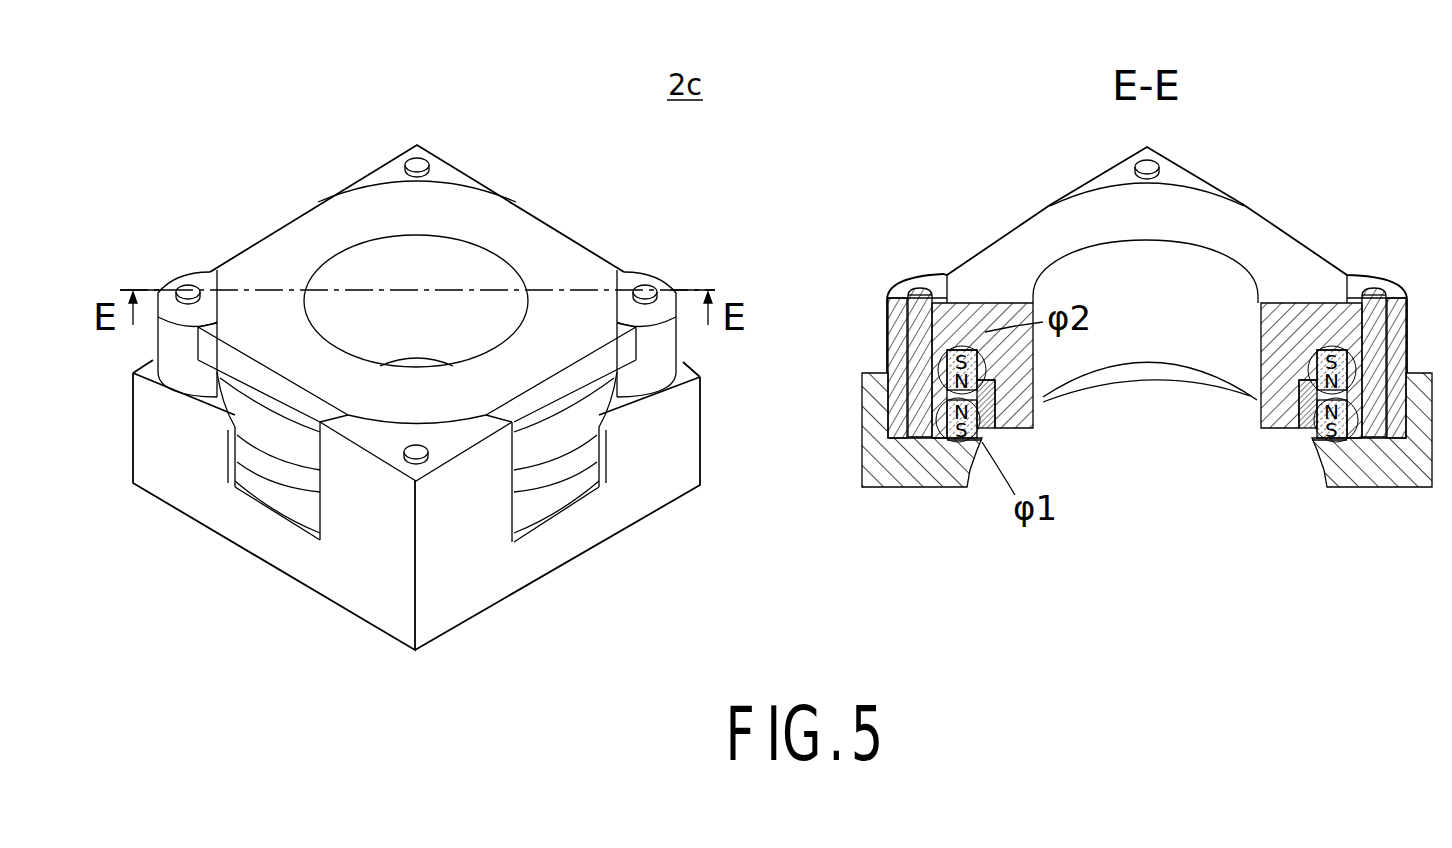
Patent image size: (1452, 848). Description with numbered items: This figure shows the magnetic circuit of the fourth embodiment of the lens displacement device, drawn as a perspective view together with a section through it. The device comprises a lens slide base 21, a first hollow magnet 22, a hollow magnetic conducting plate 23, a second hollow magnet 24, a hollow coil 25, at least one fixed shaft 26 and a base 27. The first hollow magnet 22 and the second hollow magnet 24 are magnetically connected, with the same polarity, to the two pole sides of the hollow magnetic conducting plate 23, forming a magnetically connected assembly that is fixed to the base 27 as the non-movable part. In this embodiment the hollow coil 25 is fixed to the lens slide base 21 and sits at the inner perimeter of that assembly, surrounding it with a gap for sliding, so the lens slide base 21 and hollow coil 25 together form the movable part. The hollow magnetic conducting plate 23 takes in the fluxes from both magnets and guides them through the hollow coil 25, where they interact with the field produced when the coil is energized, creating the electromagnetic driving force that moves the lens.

The lens slide base 21 is at (267, 243).
The first hollow magnet 22 is at (236, 478).
The hollow magnetic conducting plate 23 is at (310, 485).
The second hollow magnet 24 is at (230, 410).
The hollow coil 25 is at (980, 430).
The fixed shaft 26 is at (186, 285).
The base 27 is at (247, 550).